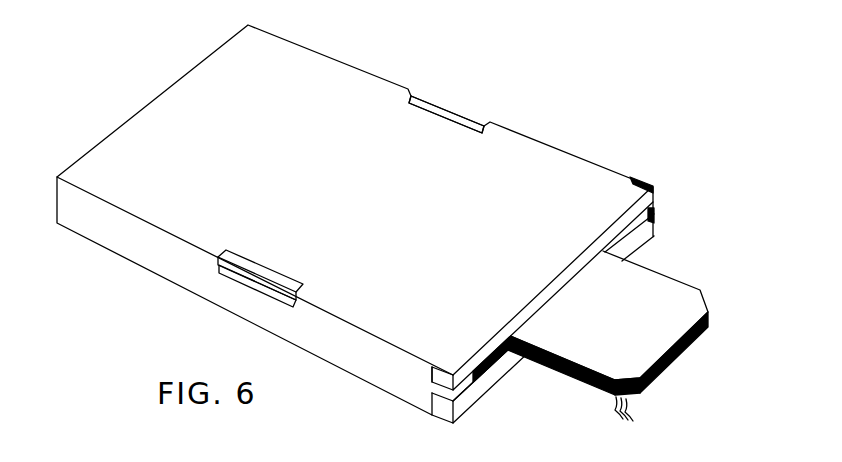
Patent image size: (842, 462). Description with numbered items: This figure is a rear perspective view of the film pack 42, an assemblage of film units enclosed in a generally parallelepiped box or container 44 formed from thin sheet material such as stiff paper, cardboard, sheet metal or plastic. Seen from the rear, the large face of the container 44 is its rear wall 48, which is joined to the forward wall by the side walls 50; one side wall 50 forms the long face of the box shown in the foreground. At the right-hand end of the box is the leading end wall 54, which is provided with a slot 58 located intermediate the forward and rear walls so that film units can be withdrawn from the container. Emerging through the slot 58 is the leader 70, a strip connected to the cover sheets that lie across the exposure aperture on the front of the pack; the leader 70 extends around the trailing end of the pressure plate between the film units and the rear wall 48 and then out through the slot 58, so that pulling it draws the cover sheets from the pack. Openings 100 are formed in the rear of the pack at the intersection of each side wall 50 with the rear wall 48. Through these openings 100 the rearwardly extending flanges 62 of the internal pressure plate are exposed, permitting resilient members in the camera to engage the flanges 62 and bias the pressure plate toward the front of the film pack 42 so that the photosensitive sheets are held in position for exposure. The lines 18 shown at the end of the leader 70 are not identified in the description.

The electrical leads 18 is at (634, 416).
The film pack 42 is at (355, 226).
The container 44 is at (355, 202).
The rear wall 48 is at (334, 180).
The side walls 50 is at (132, 244).
The leading end wall 54 is at (543, 320).
The slot 58 is at (508, 371).
The flanges 62 is at (247, 282).
The leader 70 is at (617, 329).
The openings 100 is at (428, 105).